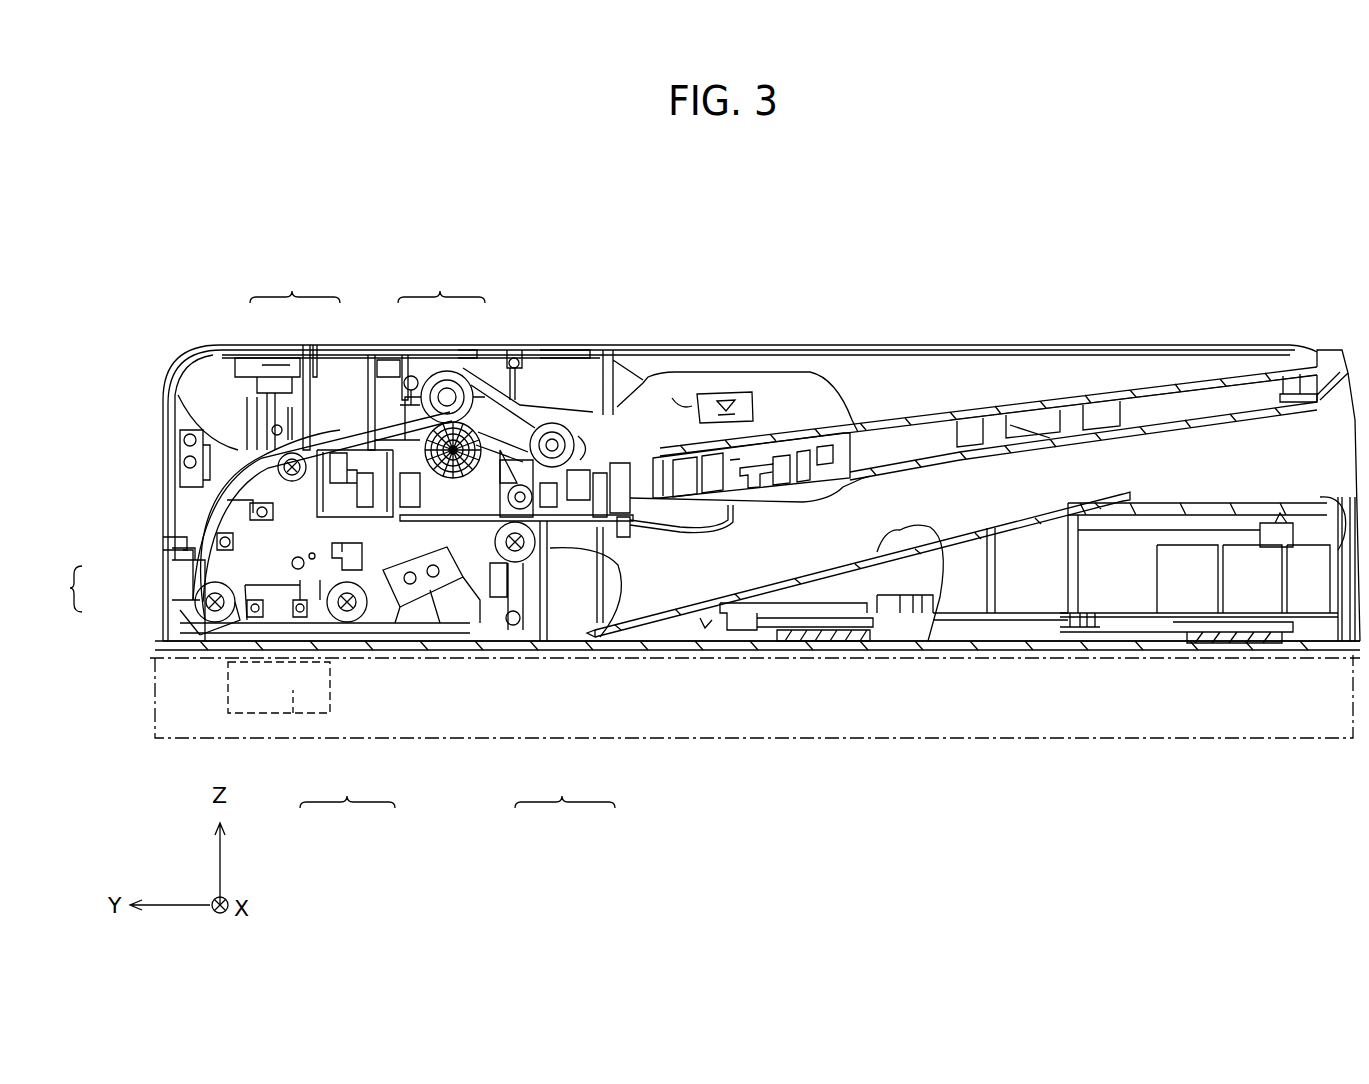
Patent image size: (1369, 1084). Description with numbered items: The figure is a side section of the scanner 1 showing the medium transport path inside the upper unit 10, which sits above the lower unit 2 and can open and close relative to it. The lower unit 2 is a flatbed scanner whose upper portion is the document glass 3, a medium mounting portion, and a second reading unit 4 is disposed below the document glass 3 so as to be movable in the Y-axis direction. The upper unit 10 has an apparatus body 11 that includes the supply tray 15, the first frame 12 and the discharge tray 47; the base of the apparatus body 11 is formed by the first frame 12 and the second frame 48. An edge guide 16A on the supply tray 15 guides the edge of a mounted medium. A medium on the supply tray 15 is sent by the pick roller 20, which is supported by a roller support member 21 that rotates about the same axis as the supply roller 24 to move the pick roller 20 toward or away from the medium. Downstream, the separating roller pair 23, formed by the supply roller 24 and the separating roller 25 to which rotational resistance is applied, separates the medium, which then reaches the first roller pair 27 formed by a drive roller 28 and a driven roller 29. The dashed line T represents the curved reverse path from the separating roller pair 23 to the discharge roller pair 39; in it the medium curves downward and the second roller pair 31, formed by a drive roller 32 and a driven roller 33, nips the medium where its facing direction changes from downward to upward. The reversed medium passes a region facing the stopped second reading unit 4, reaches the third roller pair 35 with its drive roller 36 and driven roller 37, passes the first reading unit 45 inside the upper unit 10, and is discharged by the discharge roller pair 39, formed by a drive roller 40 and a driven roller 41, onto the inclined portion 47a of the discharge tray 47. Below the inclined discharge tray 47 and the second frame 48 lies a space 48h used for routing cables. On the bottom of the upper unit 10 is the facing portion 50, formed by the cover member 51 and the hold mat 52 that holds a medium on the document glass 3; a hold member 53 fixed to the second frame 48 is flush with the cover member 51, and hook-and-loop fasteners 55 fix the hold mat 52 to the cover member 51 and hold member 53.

The scanner 1 is at (810, 192).
The lower unit 2 is at (1050, 712).
The document glass 3 is at (515, 641).
The second reading unit 4 is at (293, 713).
The upper unit 10 is at (680, 280).
The apparatus body 11 is at (868, 345).
The first frame 12 is at (233, 447).
The supply tray 15 is at (963, 387).
The edge guide 16A is at (760, 385).
The pick roller 20 is at (563, 407).
The roller support member 21 is at (515, 420).
The separating roller pair 23 is at (441, 285).
The supply roller 24 is at (470, 372).
The separating roller 25 is at (413, 374).
The first roller pair 27 is at (295, 285).
The drive roller 28 is at (312, 400).
The driven roller 29 is at (278, 380).
The second roller pair 31 is at (63, 589).
The drive roller 32 is at (160, 560).
The driven roller 33 is at (152, 612).
The third roller pair 35 is at (347, 817).
The drive roller 36 is at (310, 641).
The driven roller 37 is at (392, 655).
The discharge roller pair 39 is at (565, 817).
The drive roller 40 is at (600, 641).
The driven roller 41 is at (560, 641).
The first reading unit 45 is at (440, 641).
The discharge tray 47 is at (1188, 467).
The inclined portion 47a is at (928, 641).
The second frame 48 is at (660, 638).
The space 48h is at (710, 628).
The facing portion 50 is at (1000, 616).
The cover member 51 is at (765, 641).
The hold mat 52 is at (742, 641).
The hold member 53 is at (1113, 641).
The hook-and-loop fastener 55 is at (1217, 641).
The curved reverse path T is at (165, 480).